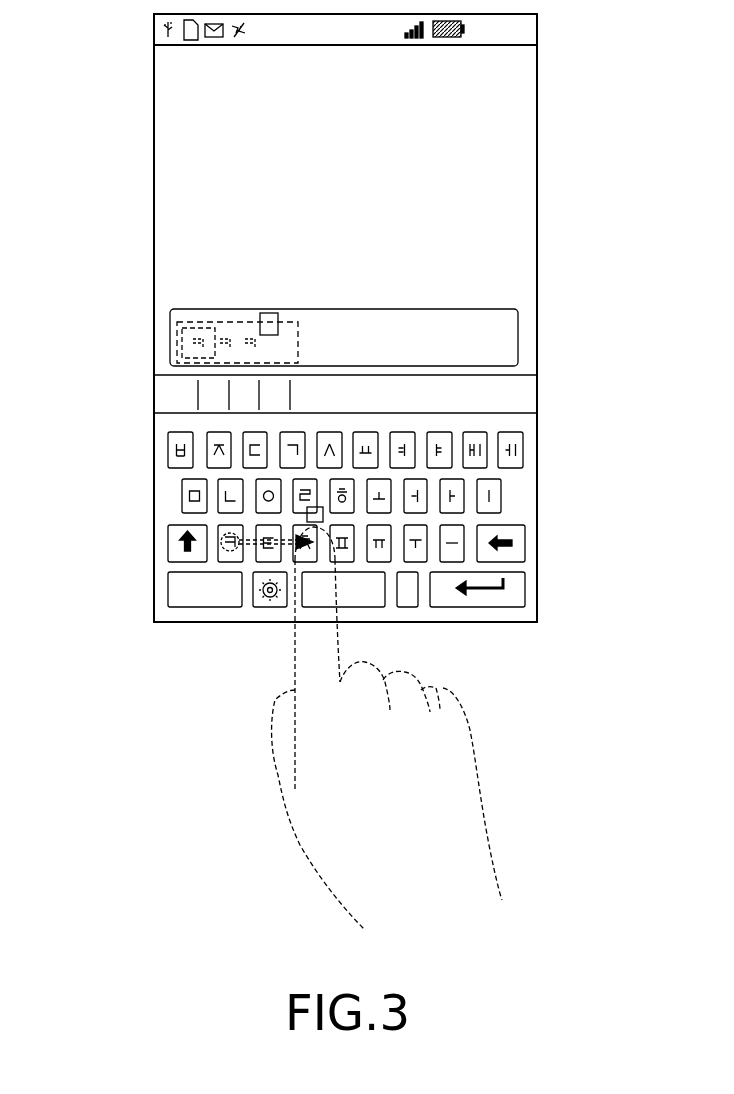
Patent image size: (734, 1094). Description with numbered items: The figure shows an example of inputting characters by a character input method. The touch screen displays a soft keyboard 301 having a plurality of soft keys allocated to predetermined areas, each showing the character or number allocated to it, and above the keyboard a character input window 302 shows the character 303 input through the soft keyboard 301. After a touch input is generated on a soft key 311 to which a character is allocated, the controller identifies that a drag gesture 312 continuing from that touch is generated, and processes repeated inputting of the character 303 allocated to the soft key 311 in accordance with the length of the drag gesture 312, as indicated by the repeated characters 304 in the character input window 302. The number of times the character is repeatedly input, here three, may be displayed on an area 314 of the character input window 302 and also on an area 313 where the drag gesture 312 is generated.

The soft keyboard 301 is at (152, 472).
The character input window 302 is at (519, 311).
The character 303 is at (181, 340).
The repeated inputting of the character 304 is at (300, 339).
The soft key 311 is at (230, 552).
The drag gesture 312 is at (272, 563).
The area where the drag gesture is generated 313 is at (307, 514).
The area of the character input window 314 is at (279, 325).